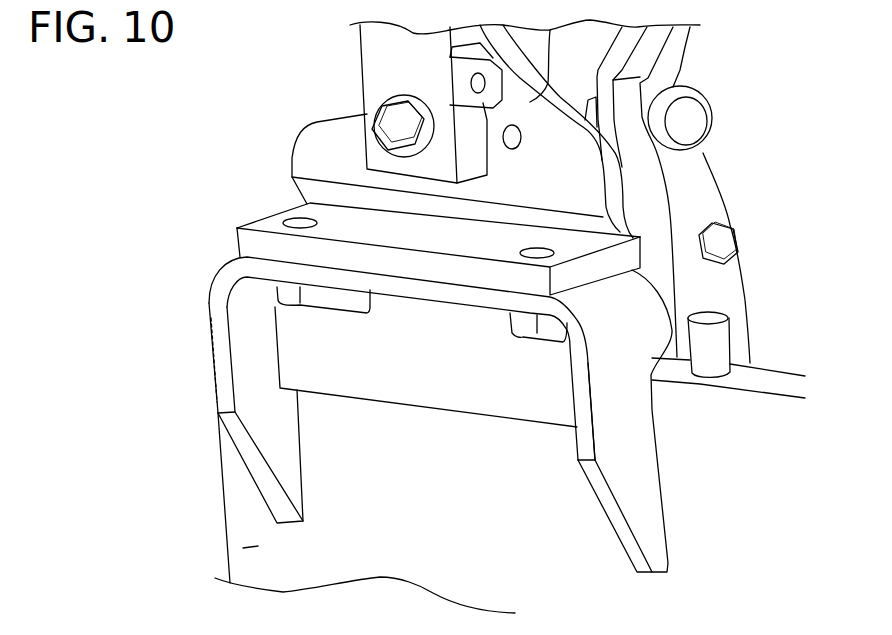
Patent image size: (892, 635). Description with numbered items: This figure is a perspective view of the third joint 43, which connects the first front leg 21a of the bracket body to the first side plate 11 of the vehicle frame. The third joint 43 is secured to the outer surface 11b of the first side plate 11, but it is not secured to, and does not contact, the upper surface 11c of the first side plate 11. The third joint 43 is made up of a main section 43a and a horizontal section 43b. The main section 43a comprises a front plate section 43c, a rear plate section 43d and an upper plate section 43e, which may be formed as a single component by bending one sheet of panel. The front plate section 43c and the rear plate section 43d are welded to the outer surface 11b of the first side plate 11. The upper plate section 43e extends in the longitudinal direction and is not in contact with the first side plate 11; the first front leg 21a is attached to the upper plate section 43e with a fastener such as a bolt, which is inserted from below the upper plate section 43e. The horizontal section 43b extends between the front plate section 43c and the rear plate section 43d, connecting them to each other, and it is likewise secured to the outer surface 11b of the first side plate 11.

The first front leg 21a is at (377, 60).
The third joint 43 is at (195, 302).
The main section 43a is at (217, 392).
The horizontal section 43b is at (350, 400).
The front plate section 43c is at (222, 343).
The rear plate section 43d is at (642, 460).
The upper plate section 43e is at (438, 289).
The first side plate 11 is at (223, 510).
The outer surface 11b is at (257, 547).
The upper surface 11c is at (768, 377).